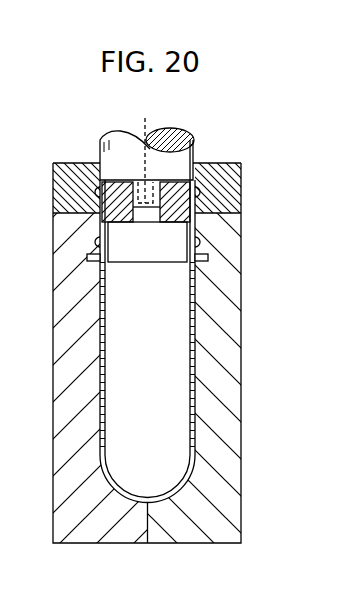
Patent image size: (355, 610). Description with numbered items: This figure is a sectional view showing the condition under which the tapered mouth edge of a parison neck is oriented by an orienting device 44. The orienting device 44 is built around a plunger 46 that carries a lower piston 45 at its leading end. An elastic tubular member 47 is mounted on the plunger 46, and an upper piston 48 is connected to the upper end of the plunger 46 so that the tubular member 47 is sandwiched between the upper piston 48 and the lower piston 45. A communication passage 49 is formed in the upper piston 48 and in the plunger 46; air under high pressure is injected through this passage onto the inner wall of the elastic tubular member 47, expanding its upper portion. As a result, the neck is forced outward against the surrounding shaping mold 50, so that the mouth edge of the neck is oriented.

The orienting device 44 is at (97, 136).
The lower piston 45 is at (120, 268).
The plunger 46 is at (100, 232).
The elastic tubular member 47 is at (100, 183).
The upper piston 48 is at (183, 133).
The communication passage 49 is at (145, 148).
The shaping mold 50 is at (53, 184).